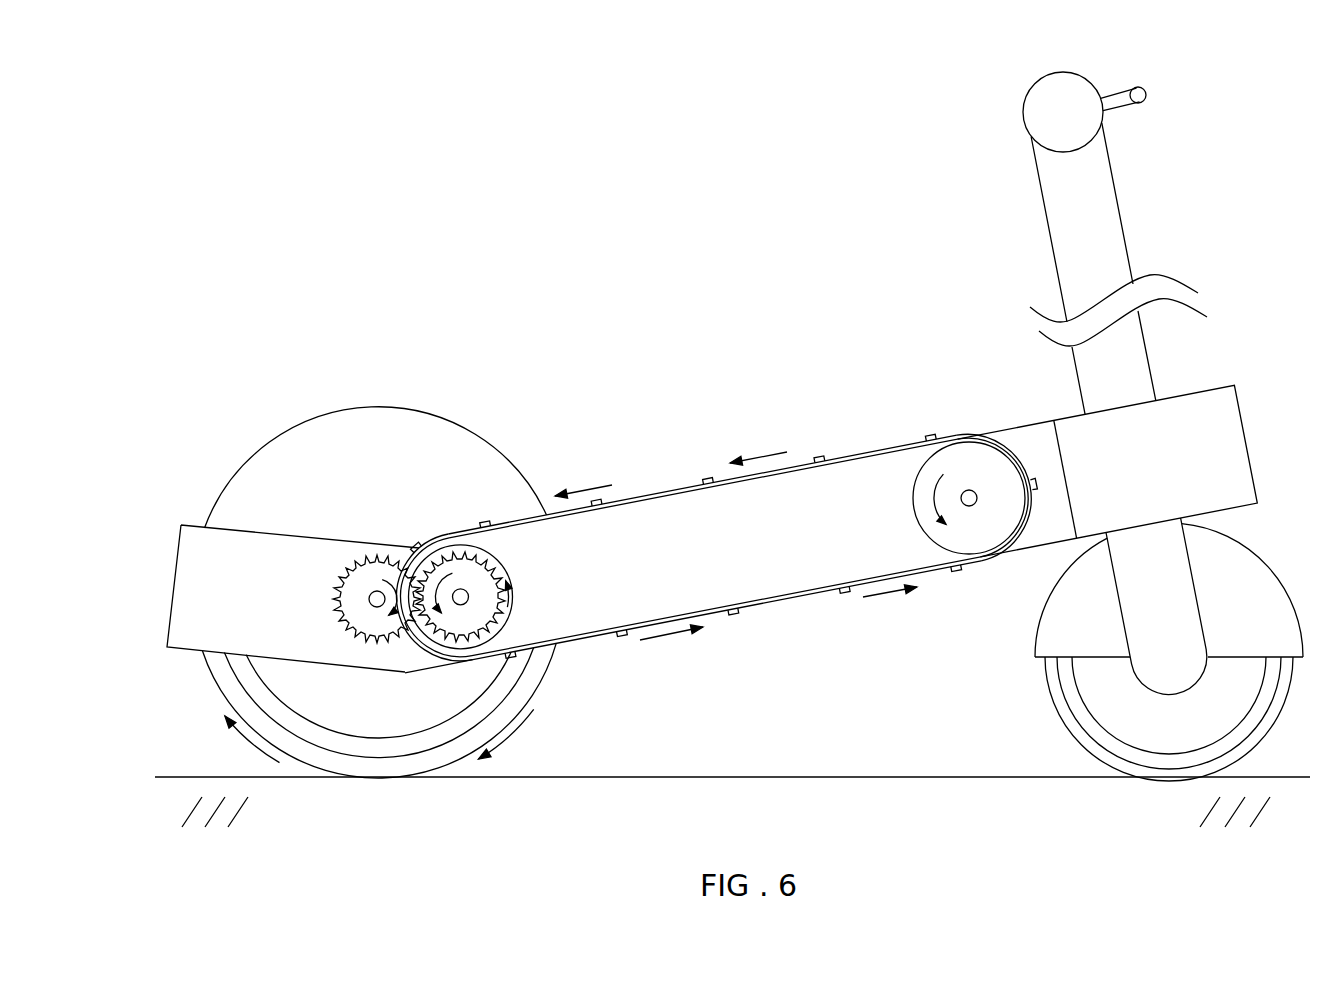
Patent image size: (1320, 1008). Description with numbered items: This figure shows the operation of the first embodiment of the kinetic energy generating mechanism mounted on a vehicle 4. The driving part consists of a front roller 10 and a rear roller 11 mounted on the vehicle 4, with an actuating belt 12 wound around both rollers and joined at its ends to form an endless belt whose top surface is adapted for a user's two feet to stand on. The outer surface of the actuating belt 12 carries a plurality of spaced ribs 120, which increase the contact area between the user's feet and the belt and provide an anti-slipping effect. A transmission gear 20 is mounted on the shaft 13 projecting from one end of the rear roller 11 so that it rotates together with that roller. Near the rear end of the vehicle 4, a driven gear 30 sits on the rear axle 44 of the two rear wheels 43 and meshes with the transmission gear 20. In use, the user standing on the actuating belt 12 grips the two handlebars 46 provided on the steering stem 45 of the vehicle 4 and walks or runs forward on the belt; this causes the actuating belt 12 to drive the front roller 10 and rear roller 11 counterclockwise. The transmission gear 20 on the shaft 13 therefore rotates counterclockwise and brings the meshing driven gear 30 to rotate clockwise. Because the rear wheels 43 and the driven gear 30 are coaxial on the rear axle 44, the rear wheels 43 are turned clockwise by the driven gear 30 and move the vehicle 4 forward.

The vehicle 4 is at (773, 646).
The front roller 10 is at (973, 530).
The rear roller 11 is at (500, 565).
The actuating belt 12 is at (653, 493).
The shaft 13 is at (970, 489).
The transmission gear 20 is at (465, 565).
The driven gear 30 is at (330, 559).
The rear wheels 43 is at (243, 688).
The rear axle 44 is at (368, 597).
The steering stem 45 is at (1100, 250).
The handlebars 46 is at (1043, 112).
The ribs 120 is at (818, 447).